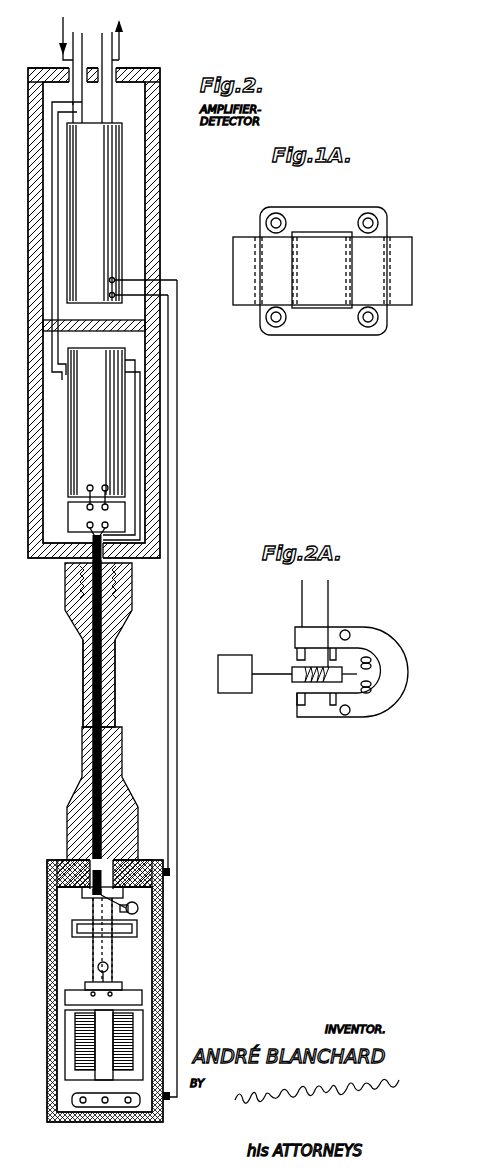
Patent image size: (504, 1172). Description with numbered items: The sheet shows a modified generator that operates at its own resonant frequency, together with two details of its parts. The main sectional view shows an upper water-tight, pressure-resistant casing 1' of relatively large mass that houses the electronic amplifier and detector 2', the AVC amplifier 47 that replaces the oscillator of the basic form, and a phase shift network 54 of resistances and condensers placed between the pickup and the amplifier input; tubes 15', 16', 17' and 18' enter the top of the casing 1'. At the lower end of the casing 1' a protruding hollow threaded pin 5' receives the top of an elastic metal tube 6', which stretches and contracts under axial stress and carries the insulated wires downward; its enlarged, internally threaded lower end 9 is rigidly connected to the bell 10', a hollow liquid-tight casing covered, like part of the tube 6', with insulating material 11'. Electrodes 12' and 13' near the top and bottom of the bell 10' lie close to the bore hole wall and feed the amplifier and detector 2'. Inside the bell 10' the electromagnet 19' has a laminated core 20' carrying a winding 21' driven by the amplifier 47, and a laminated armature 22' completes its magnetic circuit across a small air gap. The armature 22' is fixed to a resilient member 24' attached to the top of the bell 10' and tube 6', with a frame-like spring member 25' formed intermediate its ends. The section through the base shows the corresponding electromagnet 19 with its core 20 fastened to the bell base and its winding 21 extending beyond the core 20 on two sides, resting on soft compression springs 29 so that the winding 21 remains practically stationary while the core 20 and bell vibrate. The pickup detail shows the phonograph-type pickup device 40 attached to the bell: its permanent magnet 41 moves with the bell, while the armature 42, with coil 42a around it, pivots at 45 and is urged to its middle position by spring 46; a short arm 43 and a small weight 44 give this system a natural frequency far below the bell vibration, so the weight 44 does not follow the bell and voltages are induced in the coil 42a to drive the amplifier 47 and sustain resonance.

In FIG. 2, the upper casing 1' is at (108, 313).
In FIG. 2, the amplifier and detector 2' is at (119, 241).
In FIG. 2, the hollow threaded pin 5' is at (112, 645).
In FIG. 2, the metal tube 6' is at (120, 675).
In FIG. 2, the lower end of tube 9 is at (80, 796).
In FIG. 2, the bell 10' is at (134, 991).
In FIG. 2, the insulating material 11' is at (139, 917).
In FIG. 2, the upper electrode 12' is at (190, 864).
In FIG. 2, the lower electrode 13' is at (183, 1105).
In FIG. 2, the tube 15' is at (48, 77).
In FIG. 2, the tube 16' is at (63, 62).
In FIG. 2, the tube 17' is at (107, 62).
In FIG. 2, the tube 18' is at (132, 71).
In FIG. 2, the electromagnet 19' is at (72, 1089).
In FIG. 2, the laminated magnetic core 20' is at (164, 1041).
In FIG. 2, the winding 21' is at (145, 1036).
In FIG. 2, the armature 22' is at (77, 994).
In FIG. 2, the resilient member 24' is at (160, 959).
In FIG. 2, the frame-like member 25' is at (74, 941).
In FIG. 2, the pickup device 40 is at (138, 907).
In FIG. 2A, the pickup device 40 is at (326, 722).
In FIG. 2, the AVC amplifier 47 is at (115, 460).
In FIG. 2, the phase shift network 54 is at (125, 530).
In FIG. 1A, the electromagnet 19 is at (313, 289).
In FIG. 1A, the laminated magnetic core 20 is at (289, 257).
In FIG. 1A, the winding 21 is at (323, 259).
In FIG. 1A, the compression springs 29 is at (272, 215).
In FIG. 2A, the permanent magnet 41 is at (310, 718).
In FIG. 2A, the armature 42 is at (345, 655).
In FIG. 2A, the coil 42a is at (310, 665).
In FIG. 2A, the short arm 43 is at (282, 690).
In FIG. 2A, the weight 44 is at (240, 690).
In FIG. 2A, the pivot 45 is at (328, 655).
In FIG. 2A, the spring 46 is at (372, 690).